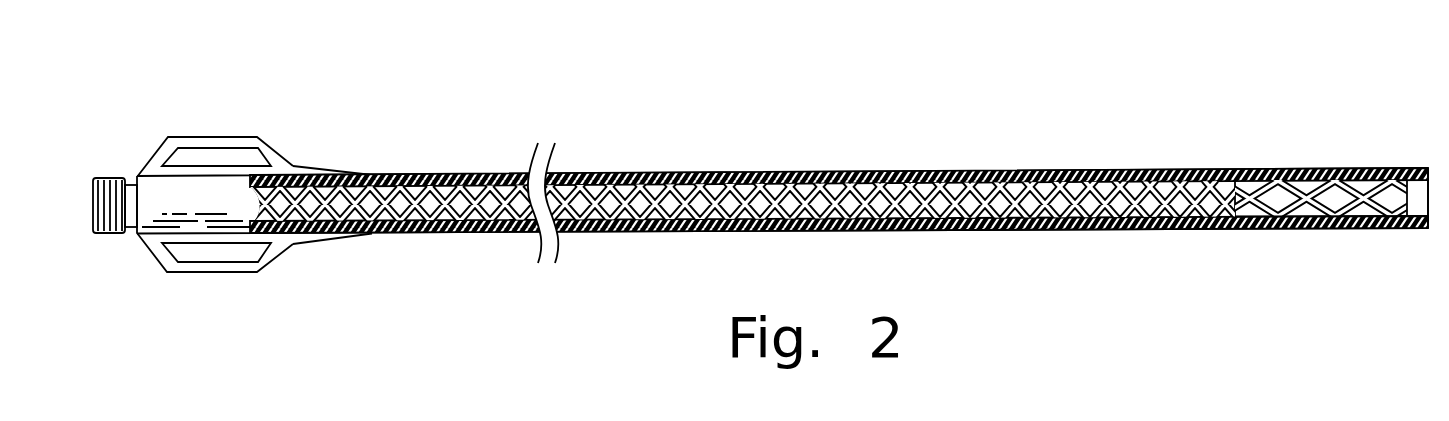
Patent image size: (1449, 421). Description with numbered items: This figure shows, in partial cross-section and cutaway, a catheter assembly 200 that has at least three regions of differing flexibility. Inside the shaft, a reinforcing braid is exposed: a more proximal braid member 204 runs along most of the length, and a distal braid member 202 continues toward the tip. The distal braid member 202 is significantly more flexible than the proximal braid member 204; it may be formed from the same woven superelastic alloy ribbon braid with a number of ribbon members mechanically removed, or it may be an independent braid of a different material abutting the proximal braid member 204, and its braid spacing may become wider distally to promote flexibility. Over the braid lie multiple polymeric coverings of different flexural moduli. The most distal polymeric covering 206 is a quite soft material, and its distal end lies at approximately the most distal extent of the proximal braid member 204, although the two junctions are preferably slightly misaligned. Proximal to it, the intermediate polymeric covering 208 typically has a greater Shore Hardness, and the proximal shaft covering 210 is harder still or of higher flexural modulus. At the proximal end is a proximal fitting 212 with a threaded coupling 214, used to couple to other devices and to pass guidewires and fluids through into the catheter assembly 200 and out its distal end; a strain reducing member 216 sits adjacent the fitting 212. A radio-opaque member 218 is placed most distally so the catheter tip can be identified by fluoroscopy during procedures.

The catheter assembly 200 is at (786, 112).
The distal braid member 202 is at (1273, 190).
The proximal braid member 204 is at (1005, 187).
The distal polymeric covering 206 is at (1298, 228).
The intermediate polymeric covering 208 is at (1087, 230).
The shaft covering 210 is at (635, 233).
The proximal fitting 212 is at (205, 188).
The threaded coupling 214 is at (106, 177).
The strain reducing member 216 is at (313, 172).
The radio-opaque member 218 is at (1403, 172).